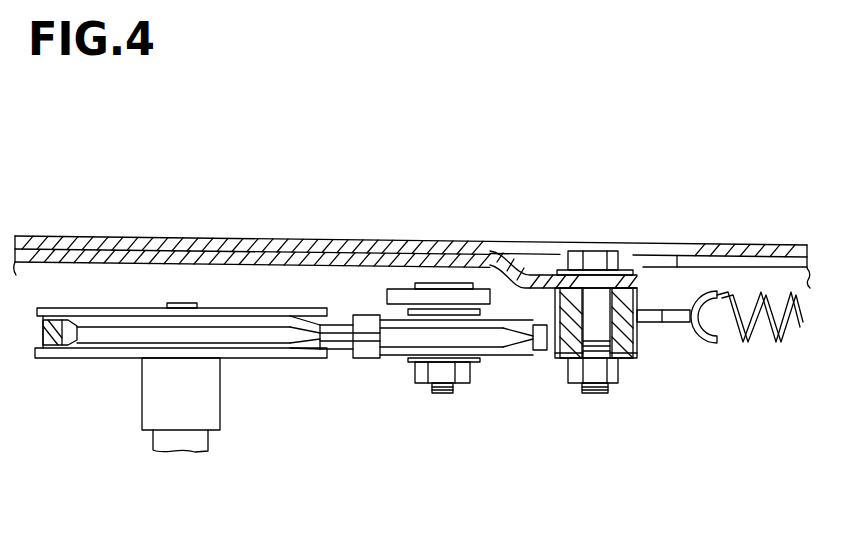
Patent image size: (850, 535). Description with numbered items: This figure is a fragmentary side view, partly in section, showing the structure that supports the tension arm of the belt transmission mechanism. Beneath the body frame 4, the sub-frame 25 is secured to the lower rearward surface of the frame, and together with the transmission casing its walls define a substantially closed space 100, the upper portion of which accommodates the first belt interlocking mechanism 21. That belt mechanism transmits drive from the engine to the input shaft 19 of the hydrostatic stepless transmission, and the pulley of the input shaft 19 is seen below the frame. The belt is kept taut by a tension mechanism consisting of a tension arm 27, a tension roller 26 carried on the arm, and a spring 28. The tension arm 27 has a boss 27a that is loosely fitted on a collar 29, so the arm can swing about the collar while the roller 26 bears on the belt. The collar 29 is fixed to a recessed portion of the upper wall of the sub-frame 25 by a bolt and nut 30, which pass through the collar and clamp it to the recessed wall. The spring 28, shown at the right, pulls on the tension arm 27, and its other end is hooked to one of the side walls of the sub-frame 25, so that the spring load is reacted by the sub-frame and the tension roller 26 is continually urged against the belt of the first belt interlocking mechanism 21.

The body frame 4 is at (158, 237).
The input shaft 19 is at (197, 438).
The first belt interlocking mechanism 21 is at (119, 396).
The sub-frame 25 is at (732, 262).
The tension roller 26 is at (380, 358).
The tension arm 27 is at (485, 290).
The boss 27a is at (613, 337).
The spring 28 is at (775, 345).
The collar 29 is at (640, 345).
The bolt and nut 30 is at (617, 253).
The closed space 100 is at (410, 439).